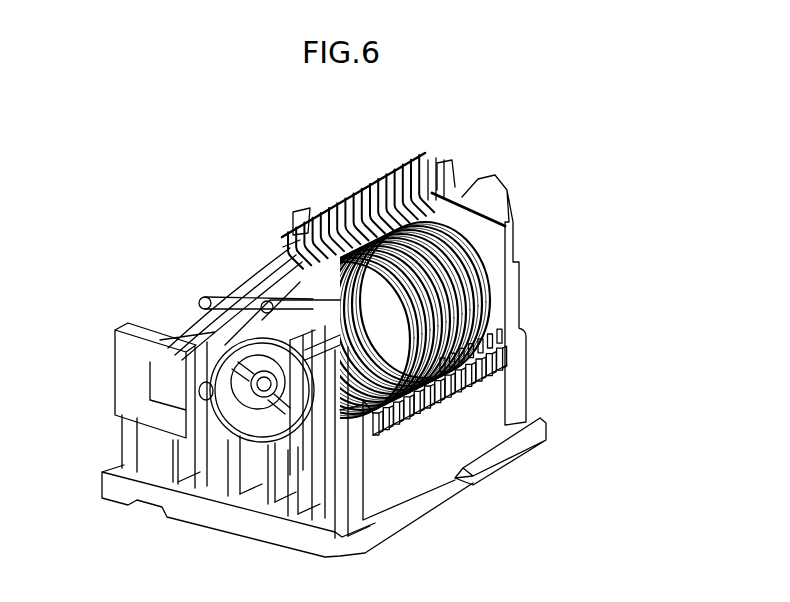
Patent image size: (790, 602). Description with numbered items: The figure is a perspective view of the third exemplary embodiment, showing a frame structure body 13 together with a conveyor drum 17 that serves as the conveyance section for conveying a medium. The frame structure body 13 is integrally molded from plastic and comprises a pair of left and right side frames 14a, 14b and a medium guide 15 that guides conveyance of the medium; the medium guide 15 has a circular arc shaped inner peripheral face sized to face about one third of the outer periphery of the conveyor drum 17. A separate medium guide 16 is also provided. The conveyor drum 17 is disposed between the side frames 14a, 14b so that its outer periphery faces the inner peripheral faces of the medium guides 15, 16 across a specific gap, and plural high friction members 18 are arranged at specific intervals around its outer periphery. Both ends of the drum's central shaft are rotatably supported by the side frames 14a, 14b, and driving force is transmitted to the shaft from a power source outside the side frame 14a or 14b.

The frame structure body 13 is at (548, 179).
The side frame 14a is at (193, 342).
The side frame 14b is at (498, 245).
The medium guide 15 is at (487, 350).
The separate medium guide 16 is at (363, 193).
The conveyor drum 17 is at (492, 285).
The high friction members 18 is at (470, 386).